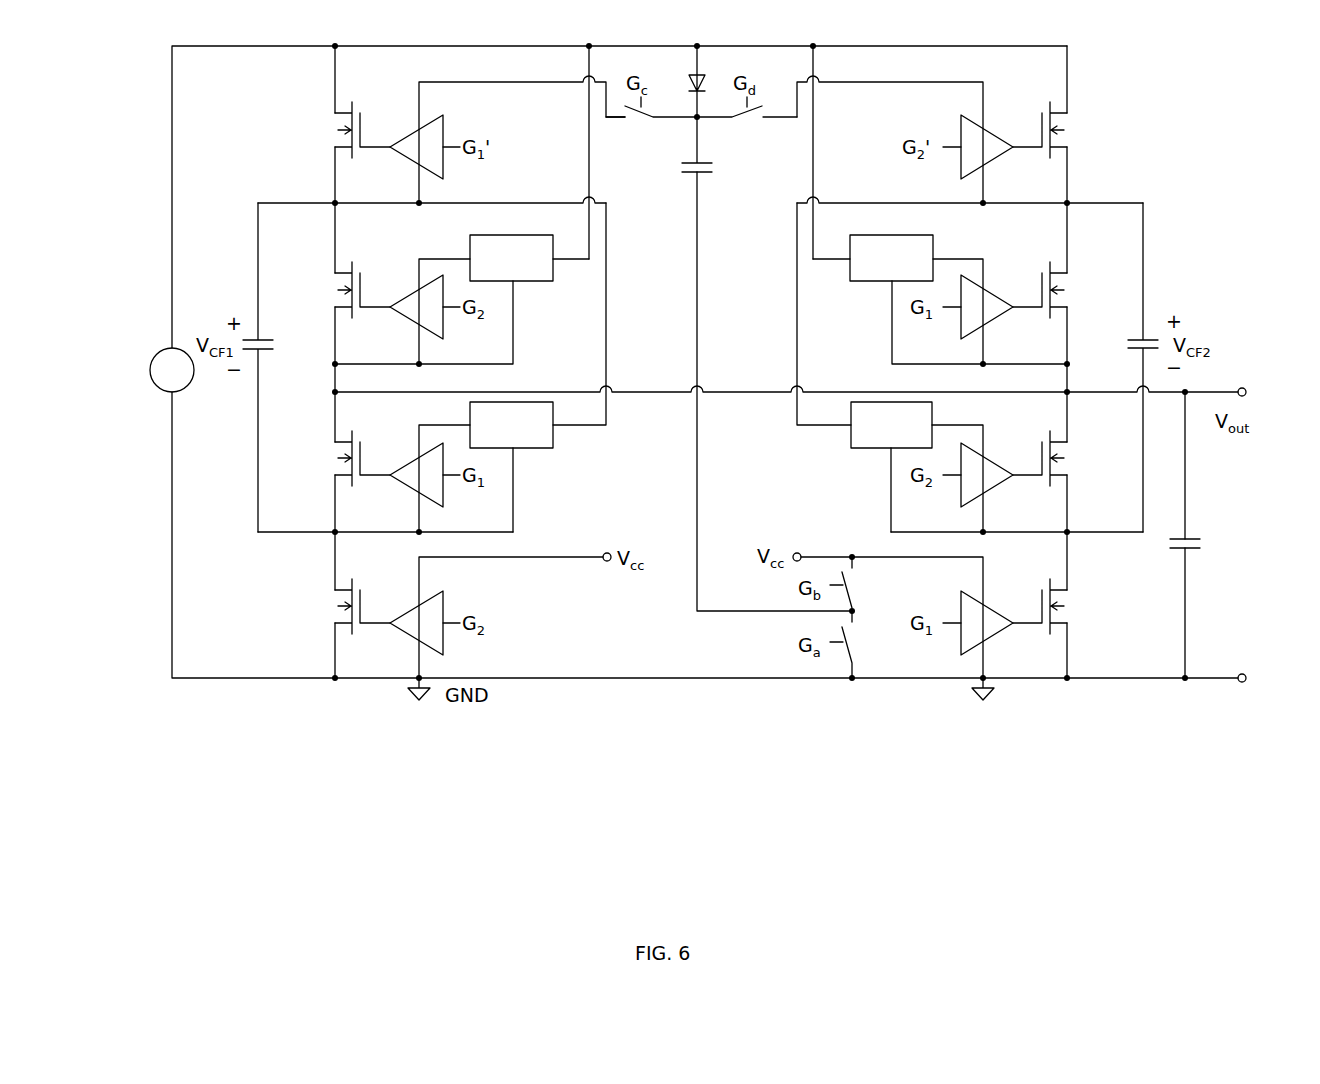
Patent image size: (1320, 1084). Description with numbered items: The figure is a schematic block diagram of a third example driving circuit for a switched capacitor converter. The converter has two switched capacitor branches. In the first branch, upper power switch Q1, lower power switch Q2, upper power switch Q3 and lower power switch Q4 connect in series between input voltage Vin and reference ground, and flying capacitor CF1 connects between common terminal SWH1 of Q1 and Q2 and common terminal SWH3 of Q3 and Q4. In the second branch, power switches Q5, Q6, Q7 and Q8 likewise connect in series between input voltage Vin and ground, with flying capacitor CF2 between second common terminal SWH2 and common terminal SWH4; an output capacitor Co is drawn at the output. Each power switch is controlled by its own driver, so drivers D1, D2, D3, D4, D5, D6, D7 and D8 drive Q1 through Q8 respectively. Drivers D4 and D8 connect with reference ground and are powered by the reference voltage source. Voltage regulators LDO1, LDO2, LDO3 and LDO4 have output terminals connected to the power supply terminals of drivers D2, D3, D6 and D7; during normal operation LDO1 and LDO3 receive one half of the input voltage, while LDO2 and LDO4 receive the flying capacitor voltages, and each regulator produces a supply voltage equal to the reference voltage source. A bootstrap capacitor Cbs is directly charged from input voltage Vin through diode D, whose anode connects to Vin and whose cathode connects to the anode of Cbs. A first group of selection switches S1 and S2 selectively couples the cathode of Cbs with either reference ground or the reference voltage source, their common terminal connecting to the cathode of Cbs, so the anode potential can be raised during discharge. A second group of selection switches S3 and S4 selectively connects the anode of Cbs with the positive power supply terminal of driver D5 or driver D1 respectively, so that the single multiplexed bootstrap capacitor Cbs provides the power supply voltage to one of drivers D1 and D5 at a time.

The input voltage Vin is at (175, 388).
The flying capacitor CF1 is at (275, 367).
The flying capacitor CF2 is at (1124, 367).
The output capacitor Co is at (1198, 550).
The bootstrap capacitor Cbs is at (714, 151).
The diode D is at (685, 81).
The common terminal SWH1 is at (432, 191).
The second common terminal SWH2 is at (970, 191).
The common terminal SWH3 is at (385, 544).
The common terminal SWH4 is at (1017, 544).
The switch S1 is at (862, 644).
The switch S2 is at (862, 582).
The switch S3 is at (651, 129).
The switch S4 is at (747, 129).
The voltage regulator LDO1 is at (511, 258).
The voltage regulator LDO2 is at (511, 425).
The voltage regulator LDO3 is at (891, 258).
The voltage regulator LDO4 is at (891, 425).
The upper power switch Q1 is at (343, 130).
The lower power switch Q2 is at (343, 290).
The upper power switch Q3 is at (343, 458).
The lower power switch Q4 is at (343, 606).
The upper power switch Q5 is at (1058, 130).
The lower power switch Q6 is at (1057, 290).
The upper power switch Q7 is at (1057, 458).
The lower power switch Q8 is at (1057, 606).
The driver D1 is at (416, 147).
The driver D2 is at (416, 307).
The driver D3 is at (416, 475).
The driver D4 is at (416, 623).
The driver D5 is at (987, 147).
The driver D6 is at (987, 307).
The driver D7 is at (987, 475).
The driver D8 is at (987, 623).